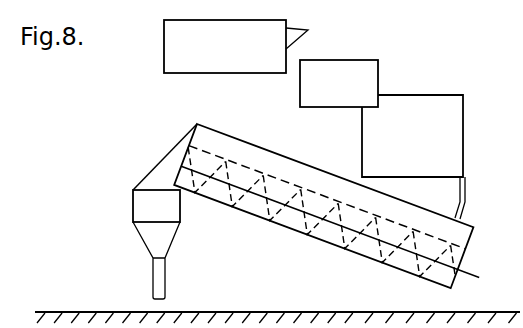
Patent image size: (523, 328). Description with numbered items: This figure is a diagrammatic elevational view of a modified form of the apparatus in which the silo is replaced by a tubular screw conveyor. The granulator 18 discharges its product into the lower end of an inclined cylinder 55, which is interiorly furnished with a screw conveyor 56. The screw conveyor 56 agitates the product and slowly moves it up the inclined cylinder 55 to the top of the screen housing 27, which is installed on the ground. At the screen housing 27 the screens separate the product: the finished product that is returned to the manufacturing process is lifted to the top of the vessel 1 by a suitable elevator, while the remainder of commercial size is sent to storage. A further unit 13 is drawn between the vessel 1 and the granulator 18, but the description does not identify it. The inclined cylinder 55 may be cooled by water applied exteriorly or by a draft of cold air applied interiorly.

The vessel 1 is at (218, 56).
The control unit 13 is at (344, 90).
The granulator 18 is at (399, 144).
The screen housing 27 is at (148, 214).
The inclined cylinder 55 is at (463, 237).
The screw conveyor 56 is at (457, 267).